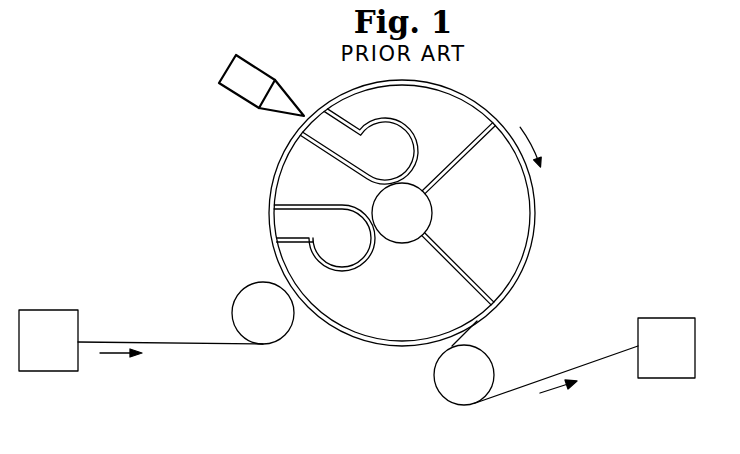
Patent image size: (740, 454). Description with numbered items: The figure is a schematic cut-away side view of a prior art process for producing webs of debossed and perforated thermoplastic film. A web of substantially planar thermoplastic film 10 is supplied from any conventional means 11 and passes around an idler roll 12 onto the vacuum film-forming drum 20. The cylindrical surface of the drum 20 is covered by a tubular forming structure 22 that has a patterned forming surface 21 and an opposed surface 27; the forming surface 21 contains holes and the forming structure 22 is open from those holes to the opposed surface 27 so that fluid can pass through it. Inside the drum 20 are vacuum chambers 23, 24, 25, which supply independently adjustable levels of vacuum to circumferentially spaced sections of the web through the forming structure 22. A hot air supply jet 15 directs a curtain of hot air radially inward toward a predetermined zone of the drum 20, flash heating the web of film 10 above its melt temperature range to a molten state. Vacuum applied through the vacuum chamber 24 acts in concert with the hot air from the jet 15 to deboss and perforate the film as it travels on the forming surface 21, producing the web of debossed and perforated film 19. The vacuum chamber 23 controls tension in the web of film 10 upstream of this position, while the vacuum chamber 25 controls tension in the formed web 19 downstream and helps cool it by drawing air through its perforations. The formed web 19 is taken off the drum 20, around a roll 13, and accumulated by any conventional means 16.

The web of substantially planar thermoplastic film 10 is at (207, 345).
The conventional supply means 11 is at (62, 310).
The idler roll 12 is at (246, 288).
The roll 13 is at (481, 349).
The hot air supply jet 15 is at (258, 107).
The conventional accumulating means 16 is at (668, 318).
The web of debossed and perforated film 19 is at (601, 358).
The vacuum film-forming drum 20 is at (553, 99).
The forming surface 21 is at (358, 338).
The forming structure 22 is at (481, 107).
The vacuum chamber 23 is at (350, 248).
The vacuum chamber 24 is at (395, 143).
The vacuum chamber 25 is at (482, 268).
The opposed surface 27 is at (534, 198).